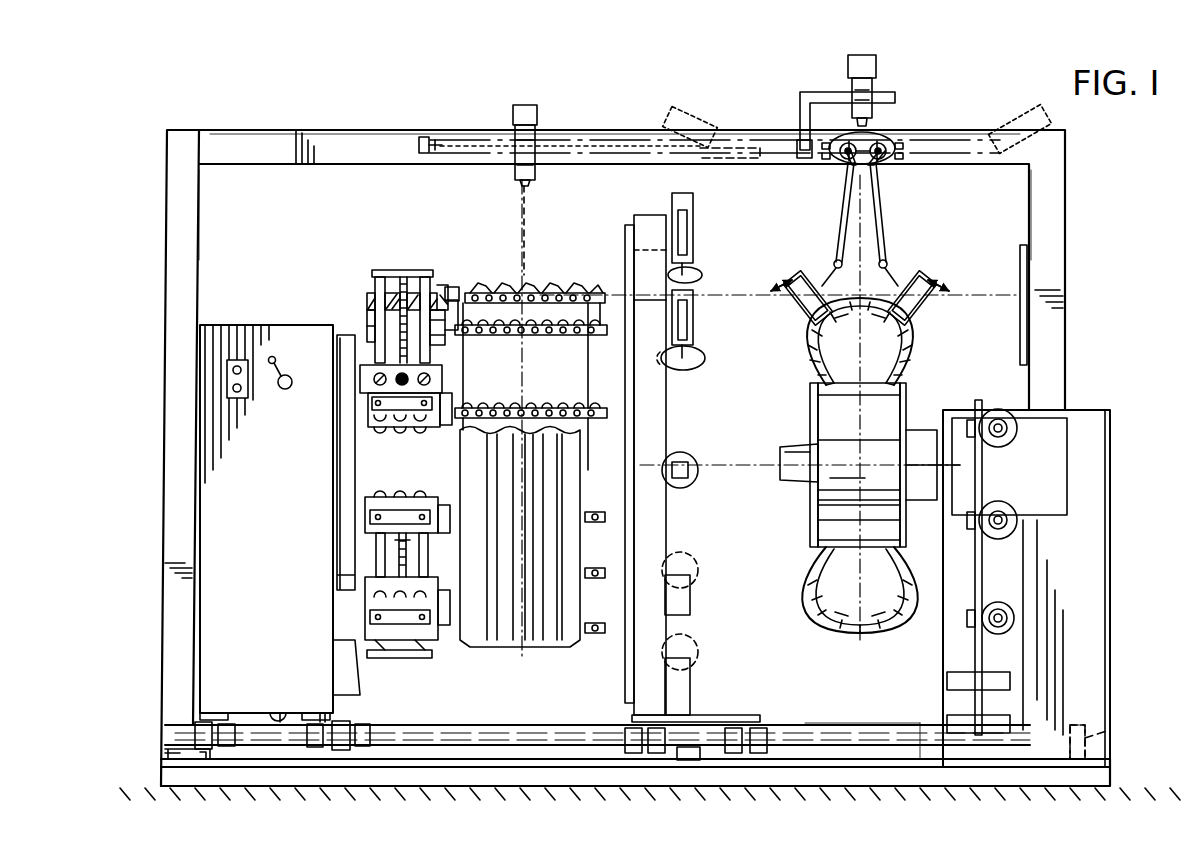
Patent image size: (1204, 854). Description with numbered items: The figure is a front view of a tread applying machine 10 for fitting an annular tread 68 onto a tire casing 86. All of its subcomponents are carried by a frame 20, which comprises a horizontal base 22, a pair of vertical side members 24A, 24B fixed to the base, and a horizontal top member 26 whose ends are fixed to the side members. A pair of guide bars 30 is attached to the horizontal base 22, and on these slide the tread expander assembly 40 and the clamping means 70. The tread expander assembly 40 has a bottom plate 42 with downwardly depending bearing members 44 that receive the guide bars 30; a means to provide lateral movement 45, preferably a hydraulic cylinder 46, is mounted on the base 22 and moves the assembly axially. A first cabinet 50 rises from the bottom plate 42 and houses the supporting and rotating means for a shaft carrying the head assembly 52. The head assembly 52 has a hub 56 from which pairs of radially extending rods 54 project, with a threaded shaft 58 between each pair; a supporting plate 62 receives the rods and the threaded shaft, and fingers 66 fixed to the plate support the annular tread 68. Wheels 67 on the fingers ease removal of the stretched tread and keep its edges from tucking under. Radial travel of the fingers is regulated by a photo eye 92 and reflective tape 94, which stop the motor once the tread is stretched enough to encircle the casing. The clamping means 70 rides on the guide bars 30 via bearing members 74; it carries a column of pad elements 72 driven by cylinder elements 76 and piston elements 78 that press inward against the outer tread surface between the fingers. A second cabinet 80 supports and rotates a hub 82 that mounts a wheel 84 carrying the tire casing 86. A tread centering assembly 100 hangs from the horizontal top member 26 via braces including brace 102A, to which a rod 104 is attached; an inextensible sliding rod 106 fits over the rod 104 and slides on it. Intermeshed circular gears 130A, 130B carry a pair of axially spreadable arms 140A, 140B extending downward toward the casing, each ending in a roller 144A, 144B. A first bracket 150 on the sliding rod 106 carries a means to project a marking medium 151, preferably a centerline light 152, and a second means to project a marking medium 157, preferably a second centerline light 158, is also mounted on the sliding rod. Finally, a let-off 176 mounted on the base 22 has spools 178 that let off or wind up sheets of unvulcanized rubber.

The tread applying machine 10 is at (945, 78).
The frame 20 is at (1068, 255).
The horizontal base 22 is at (1100, 786).
The vertical side member 24A is at (166, 400).
The vertical side member 24B is at (1066, 360).
The horizontal top member 26 is at (272, 130).
The guide bars 30 is at (488, 725).
The tread expander assembly 40 is at (458, 656).
The bottom plate 42 is at (283, 712).
The bearing members 44 is at (230, 752).
The means to provide lateral movement 45 is at (840, 716).
The hydraulic cylinder 46 is at (1090, 724).
The first cabinet 50 is at (262, 325).
The head assembly 52 is at (400, 268).
The radially extending rods 54 is at (376, 290).
The hub 56 is at (442, 378).
The threaded shaft 58 is at (398, 284).
The supporting plate 62 is at (367, 298).
The fingers 66 is at (598, 290).
The wheels 67 is at (592, 336).
The annular tread 68 is at (505, 290).
The clamping means 70 is at (643, 215).
The pressure discs 72 is at (690, 370).
The bearing members 74 is at (628, 737).
The cylinder 76 is at (692, 215).
The piston rod 78 is at (688, 245).
The second cabinet 80 is at (1112, 465).
The hub 82 is at (790, 449).
The wheel 84 is at (906, 402).
The tire casing 86 is at (908, 346).
The photo eye 92 is at (452, 287).
The reflective tape 94 is at (1020, 272).
The tread centering assembly 100 is at (898, 150).
The brace 102A is at (423, 137).
The rod 104 is at (432, 152).
The inextensible sliding rod 106 is at (490, 140).
The circular gear 130A is at (840, 142).
The circular gear 130B is at (882, 142).
The axially spreadable arm 140A is at (846, 228).
The axially spreadable arm 140B is at (886, 225).
The roller 144A is at (795, 316).
The roller 144B is at (925, 316).
The first bracket 150 is at (806, 92).
The means to project a marking medium 151 is at (873, 60).
The centerline light 152 is at (850, 68).
The second means to project a marking medium 157 is at (520, 104).
The second centerline light 158 is at (530, 104).
The let-off 176 is at (988, 578).
The spools 178 is at (1012, 432).